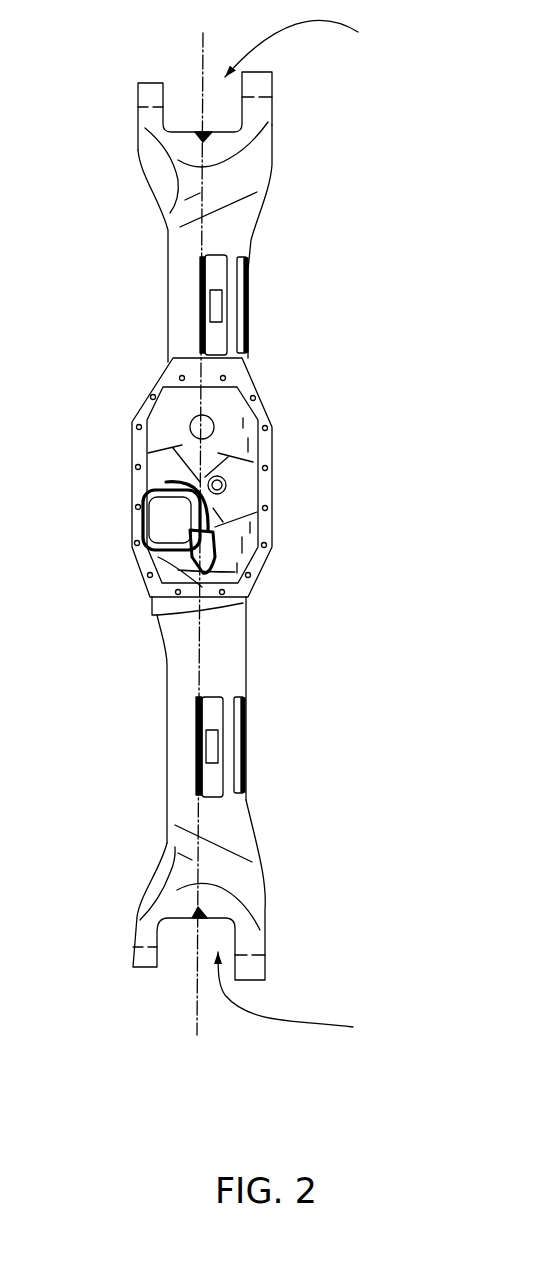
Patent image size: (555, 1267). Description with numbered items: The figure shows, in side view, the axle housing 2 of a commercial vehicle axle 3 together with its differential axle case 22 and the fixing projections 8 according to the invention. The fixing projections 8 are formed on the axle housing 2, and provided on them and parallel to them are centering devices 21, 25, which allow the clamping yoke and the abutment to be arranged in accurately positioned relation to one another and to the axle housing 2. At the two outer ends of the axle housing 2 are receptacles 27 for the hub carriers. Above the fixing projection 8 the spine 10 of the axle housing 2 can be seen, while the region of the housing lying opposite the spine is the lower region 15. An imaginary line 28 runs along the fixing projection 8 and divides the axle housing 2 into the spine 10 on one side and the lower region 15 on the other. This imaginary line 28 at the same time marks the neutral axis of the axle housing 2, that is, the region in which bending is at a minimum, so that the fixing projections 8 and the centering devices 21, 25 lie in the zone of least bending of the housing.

The spine 10 is at (235, 532).
The axle housing 2 is at (238, 220).
The commercial vehicle axle 3 is at (283, 507).
The differential axle case 22 is at (200, 501).
The lower region 15 is at (275, 148).
The centering device 21 is at (238, 290).
The fixing projection 8 is at (228, 322).
The centering device 25 is at (253, 342).
The receptacle for the hub carriers 27 is at (302, 532).
The imaginary line 28 is at (202, 42).